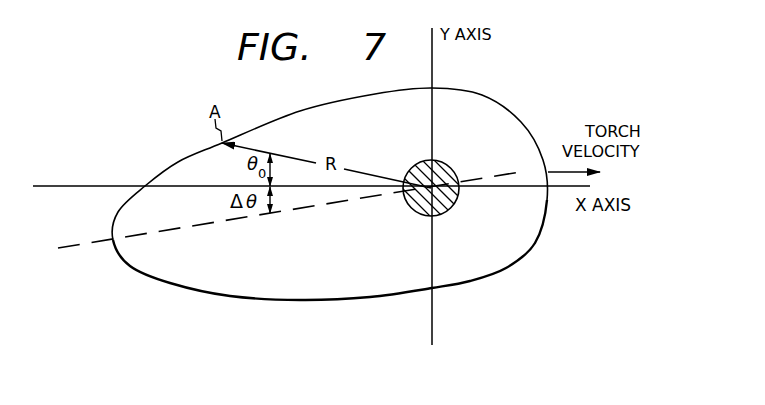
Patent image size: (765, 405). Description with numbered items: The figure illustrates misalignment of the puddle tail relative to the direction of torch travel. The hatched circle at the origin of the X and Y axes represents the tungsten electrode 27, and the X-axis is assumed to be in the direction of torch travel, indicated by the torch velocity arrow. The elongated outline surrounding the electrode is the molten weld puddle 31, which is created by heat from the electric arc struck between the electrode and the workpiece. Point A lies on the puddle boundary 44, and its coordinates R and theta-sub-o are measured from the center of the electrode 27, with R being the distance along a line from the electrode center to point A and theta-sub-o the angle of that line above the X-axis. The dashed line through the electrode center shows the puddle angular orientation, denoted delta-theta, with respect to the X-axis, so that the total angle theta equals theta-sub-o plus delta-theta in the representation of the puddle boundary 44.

The puddle boundary 44 is at (329, 164).
The molten weld puddle 31 is at (329, 266).
The tungsten electrode 27 is at (423, 180).